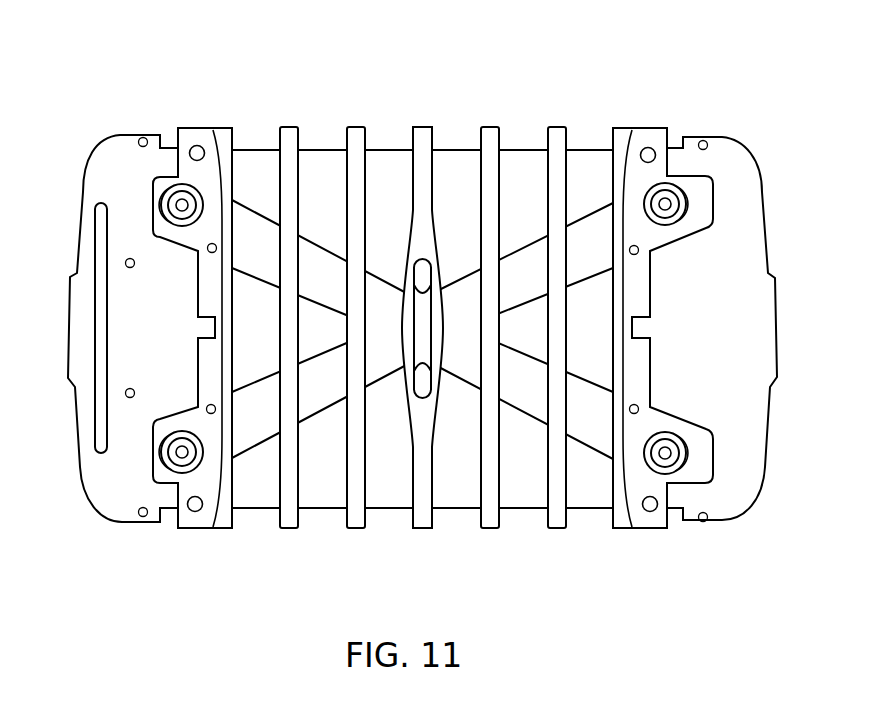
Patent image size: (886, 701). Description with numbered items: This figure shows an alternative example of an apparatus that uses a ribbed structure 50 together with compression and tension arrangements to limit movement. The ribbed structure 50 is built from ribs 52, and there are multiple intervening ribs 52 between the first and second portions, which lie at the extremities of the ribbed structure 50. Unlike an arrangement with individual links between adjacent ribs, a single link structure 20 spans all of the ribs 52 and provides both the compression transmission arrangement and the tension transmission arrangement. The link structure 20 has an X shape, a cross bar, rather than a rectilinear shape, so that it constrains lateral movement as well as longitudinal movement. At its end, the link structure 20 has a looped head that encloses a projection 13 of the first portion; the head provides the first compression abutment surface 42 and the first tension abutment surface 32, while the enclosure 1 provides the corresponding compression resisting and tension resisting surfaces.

The enclosure 1 is at (166, 232).
The projection 13 is at (176, 204).
The link structure 20 is at (310, 250).
The first tension abutment surface 32 is at (160, 178).
The first compression abutment surface 42 is at (194, 231).
The ribbed structure 50 is at (406, 302).
The ribs 52 is at (547, 562).